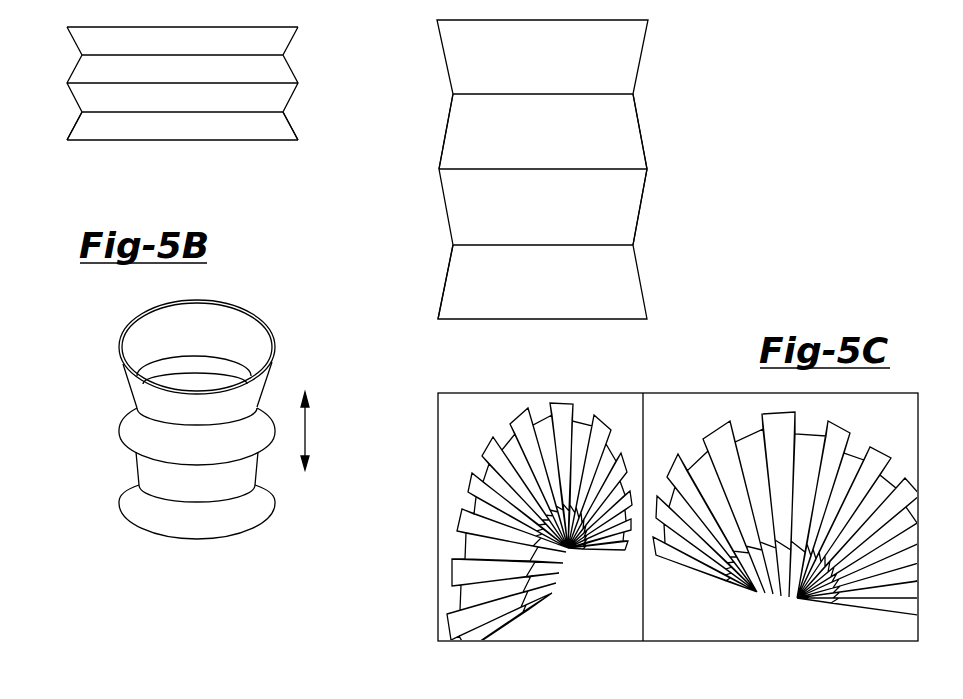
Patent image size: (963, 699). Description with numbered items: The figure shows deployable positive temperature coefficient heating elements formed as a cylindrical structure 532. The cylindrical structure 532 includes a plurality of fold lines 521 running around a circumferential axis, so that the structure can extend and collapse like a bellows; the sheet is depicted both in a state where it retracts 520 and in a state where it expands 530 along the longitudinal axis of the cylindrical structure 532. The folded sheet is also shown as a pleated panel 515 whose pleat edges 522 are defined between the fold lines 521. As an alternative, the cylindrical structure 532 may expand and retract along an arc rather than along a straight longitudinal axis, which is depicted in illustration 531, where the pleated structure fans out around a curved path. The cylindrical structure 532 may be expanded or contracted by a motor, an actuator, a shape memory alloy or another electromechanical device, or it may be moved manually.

In FIG. 5C, the pleated panel 515 is at (691, 15).
In FIG. 5B, the retracted state 520 is at (197, 180).
In FIG. 5B, the fold lines 521 is at (112, 125).
In FIG. 5C, the fold lines 521 is at (477, 247).
In FIG. 5B, the pleat edge 522 is at (287, 126).
In FIG. 5C, the pleat edge 522 is at (447, 127).
In FIG. 5C, the expanded state 530 is at (710, 210).
In FIG. 5C, the illustration 531 is at (655, 684).
In FIG. 5C, the cylindrical structure 532 is at (205, 594).